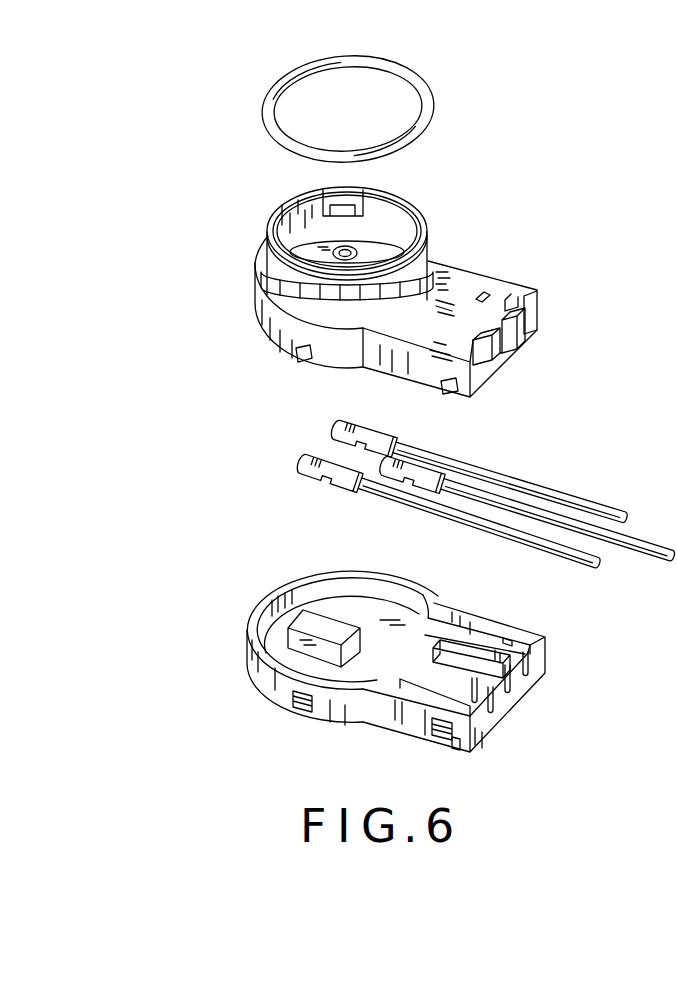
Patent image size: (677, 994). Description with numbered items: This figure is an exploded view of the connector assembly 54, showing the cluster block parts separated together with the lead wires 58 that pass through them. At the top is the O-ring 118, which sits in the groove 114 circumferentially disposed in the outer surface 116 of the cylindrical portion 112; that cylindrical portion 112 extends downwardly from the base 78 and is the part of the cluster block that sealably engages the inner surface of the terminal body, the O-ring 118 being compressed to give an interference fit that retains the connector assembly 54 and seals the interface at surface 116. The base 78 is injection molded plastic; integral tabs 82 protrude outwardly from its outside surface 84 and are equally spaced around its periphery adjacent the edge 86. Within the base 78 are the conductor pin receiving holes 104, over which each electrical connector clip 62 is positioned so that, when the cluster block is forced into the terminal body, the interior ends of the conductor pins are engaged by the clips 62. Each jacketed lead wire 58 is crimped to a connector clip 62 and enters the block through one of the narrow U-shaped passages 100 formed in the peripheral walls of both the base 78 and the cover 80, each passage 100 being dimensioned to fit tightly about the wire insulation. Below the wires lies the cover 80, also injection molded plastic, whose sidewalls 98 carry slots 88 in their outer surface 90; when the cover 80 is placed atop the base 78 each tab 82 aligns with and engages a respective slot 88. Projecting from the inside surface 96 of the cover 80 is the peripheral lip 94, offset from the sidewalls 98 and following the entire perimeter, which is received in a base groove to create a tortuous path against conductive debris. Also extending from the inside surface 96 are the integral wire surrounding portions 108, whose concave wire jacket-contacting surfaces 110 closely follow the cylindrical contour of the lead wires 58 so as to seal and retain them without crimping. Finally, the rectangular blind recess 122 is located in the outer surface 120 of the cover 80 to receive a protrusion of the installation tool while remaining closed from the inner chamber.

The connector assembly 54 is at (202, 738).
The O-ring 118 is at (423, 93).
The conductor pin receiving holes 104 is at (343, 251).
The cylindrical portion 112 is at (430, 226).
The outer surface 116 is at (432, 257).
The groove 114 is at (255, 263).
The base 78 is at (413, 306).
The U-shaped passages 100 is at (490, 378).
The tabs 82 is at (448, 392).
The outside surface 84 is at (397, 370).
The edge 86 is at (323, 365).
The electrical connector clip 62 is at (337, 427).
The lead wires 58 is at (613, 507).
The blind recess 122 is at (313, 620).
The outer surface 90 is at (270, 673).
The slots 88 is at (298, 708).
The outer surface 120 is at (323, 720).
The wire jacket-contacting surfaces 110 is at (410, 690).
The wire surrounding portions 108 is at (447, 657).
The inside surface 96 is at (383, 628).
The peripheral lip 94 is at (445, 635).
The cover 80 is at (405, 676).
The sidewalls 98 is at (420, 722).